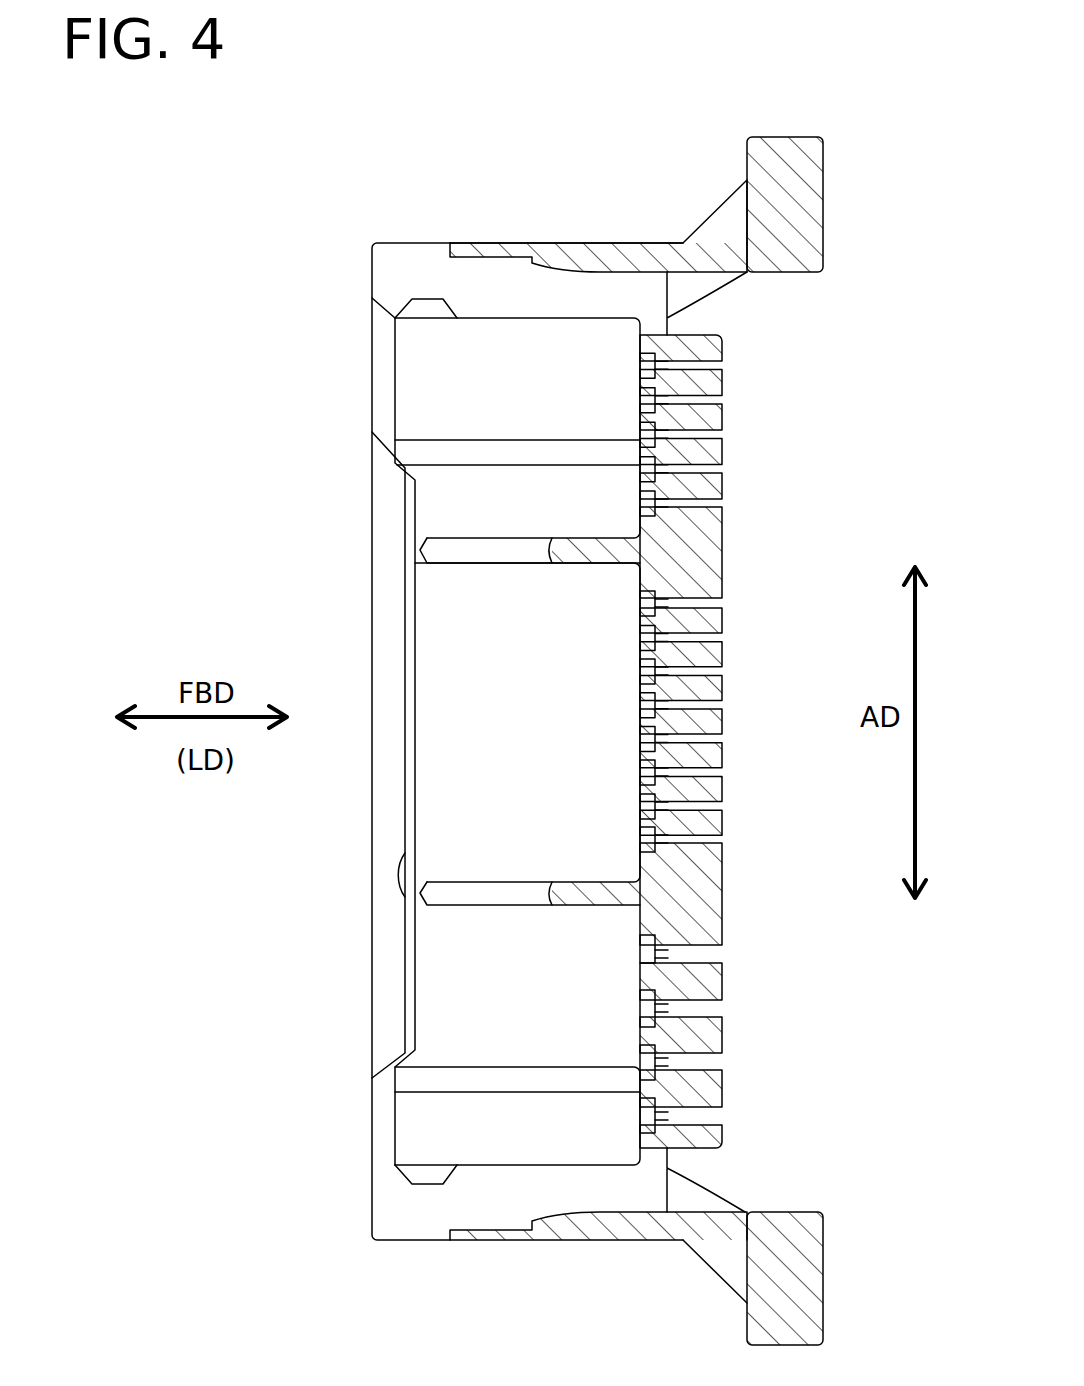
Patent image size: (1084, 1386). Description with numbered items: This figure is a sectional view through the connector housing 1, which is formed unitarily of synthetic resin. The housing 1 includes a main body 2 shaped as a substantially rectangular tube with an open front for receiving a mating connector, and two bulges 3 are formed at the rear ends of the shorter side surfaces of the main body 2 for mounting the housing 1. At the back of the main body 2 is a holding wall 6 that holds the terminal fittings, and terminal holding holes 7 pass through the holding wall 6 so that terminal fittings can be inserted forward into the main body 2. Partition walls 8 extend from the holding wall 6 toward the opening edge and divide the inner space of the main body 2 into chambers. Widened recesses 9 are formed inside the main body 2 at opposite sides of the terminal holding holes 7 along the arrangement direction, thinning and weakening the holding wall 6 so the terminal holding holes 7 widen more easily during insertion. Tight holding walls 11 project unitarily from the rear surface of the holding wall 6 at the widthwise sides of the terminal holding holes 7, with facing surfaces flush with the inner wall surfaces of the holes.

The housing 1 is at (315, 277).
The main body 2 is at (557, 252).
The bulge 3 is at (806, 174).
The holding wall 6 is at (650, 1146).
The terminal holding hole 7 is at (663, 1063).
The partition wall 8 is at (470, 553).
The widened recess 9 is at (653, 944).
The tight holding wall 11 is at (715, 651).